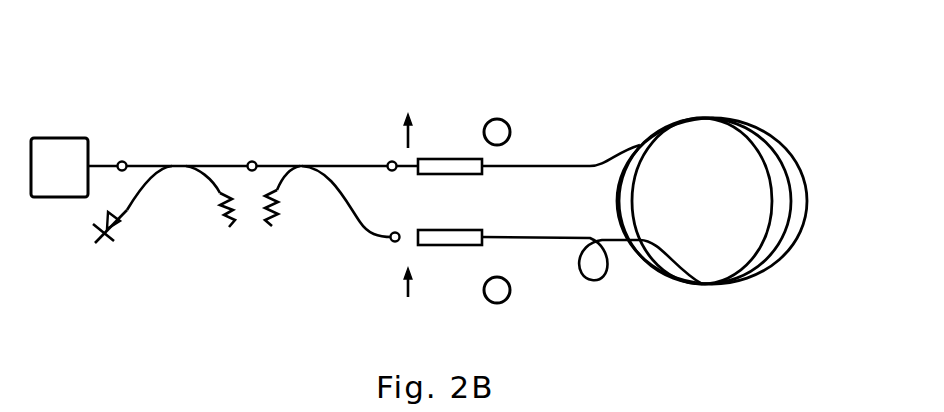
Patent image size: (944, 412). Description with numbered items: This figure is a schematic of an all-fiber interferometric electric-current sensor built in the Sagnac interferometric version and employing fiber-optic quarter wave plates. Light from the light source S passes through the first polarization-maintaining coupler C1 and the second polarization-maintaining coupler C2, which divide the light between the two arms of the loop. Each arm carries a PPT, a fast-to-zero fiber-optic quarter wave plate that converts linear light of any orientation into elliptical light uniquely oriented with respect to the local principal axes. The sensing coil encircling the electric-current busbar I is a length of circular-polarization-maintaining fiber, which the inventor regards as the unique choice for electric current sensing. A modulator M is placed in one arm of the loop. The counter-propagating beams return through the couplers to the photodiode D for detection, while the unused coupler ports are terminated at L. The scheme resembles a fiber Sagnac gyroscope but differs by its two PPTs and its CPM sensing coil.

The light source S is at (59, 167).
The polarization-maintaining coupler C1 is at (169, 162).
The polarization-maintaining coupler C2 is at (320, 175).
The photodiode D is at (111, 240).
The loss / index-matched fiber end L is at (245, 225).
The fiber-optic quarter wave plate PPT is at (449, 197).
The modulator M is at (592, 270).
The electric-current busbar I is at (690, 38).